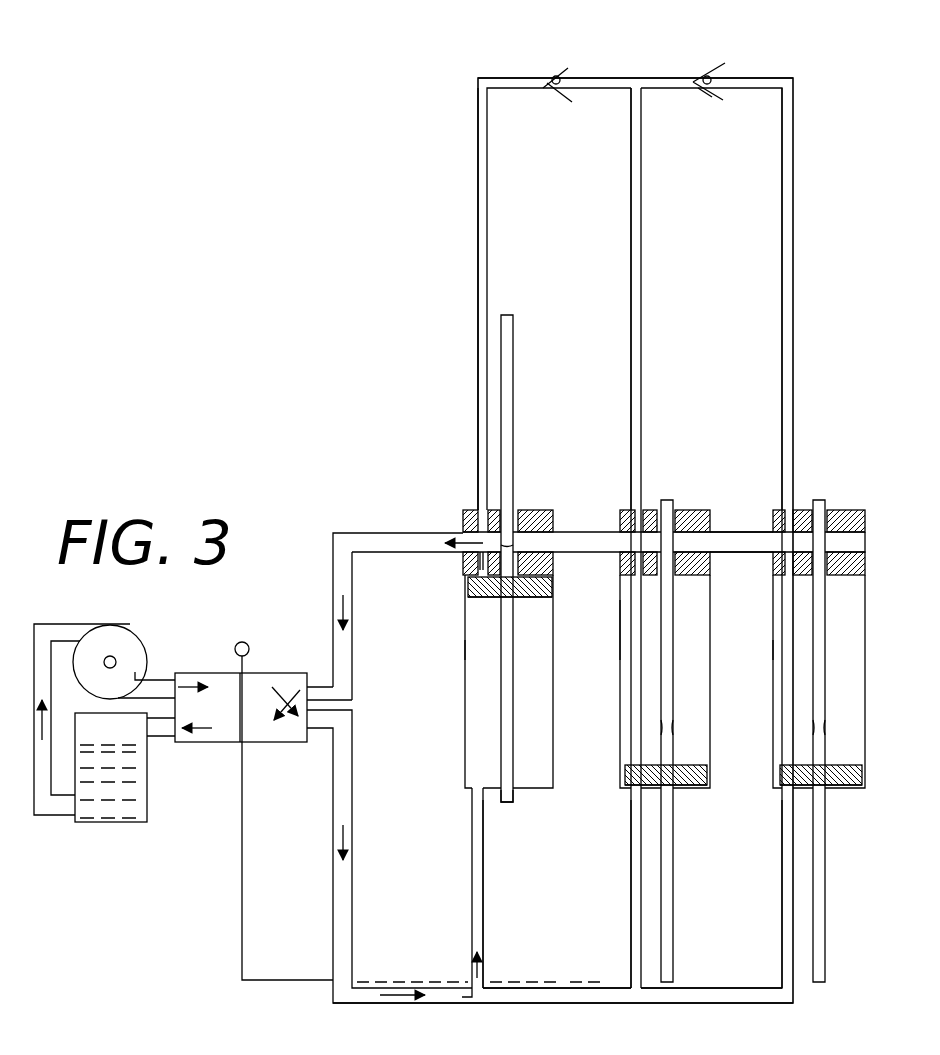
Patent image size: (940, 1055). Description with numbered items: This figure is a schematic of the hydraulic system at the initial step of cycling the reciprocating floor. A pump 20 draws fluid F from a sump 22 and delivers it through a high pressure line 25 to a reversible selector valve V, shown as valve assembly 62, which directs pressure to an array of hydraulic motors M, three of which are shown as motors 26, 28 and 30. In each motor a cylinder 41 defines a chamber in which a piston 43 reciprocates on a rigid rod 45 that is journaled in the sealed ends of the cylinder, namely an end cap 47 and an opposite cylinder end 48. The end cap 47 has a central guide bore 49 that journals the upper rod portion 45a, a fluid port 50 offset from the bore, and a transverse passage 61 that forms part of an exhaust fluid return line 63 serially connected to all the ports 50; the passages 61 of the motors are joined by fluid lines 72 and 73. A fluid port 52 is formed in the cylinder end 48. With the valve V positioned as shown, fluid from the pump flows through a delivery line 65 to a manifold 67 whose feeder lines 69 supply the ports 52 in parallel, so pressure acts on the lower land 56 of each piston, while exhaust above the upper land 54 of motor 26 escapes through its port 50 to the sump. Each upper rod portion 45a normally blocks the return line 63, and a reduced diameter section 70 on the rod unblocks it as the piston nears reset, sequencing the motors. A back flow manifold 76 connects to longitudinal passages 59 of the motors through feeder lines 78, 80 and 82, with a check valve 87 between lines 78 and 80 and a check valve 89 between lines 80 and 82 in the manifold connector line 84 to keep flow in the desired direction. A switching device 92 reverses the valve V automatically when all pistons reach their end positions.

The pump 20 is at (130, 628).
The sump 22 is at (147, 792).
The high pressure line 25 is at (168, 680).
The hydraulic motor 26 is at (463, 733).
The hydraulic motor 28 is at (618, 733).
The hydraulic motor 30 is at (771, 733).
The cylinder 41 is at (465, 650).
The piston 43 is at (482, 598).
The rod 45 is at (503, 695).
The upper portion of rod 45a is at (513, 366).
The end cap 47 is at (513, 522).
The cylinder end 48 is at (535, 790).
The guide bore 49 is at (505, 550).
The fluid port 50 is at (468, 580).
The fluid port 52 is at (478, 790).
The land 54 is at (628, 770).
The land 56 is at (620, 627).
The longitudinal passage 59 is at (465, 515).
The transverse passage 61 is at (527, 540).
The control valve 62 is at (305, 673).
The exhaust fluid return line 63 is at (333, 540).
The delivery line 65 is at (310, 728).
The manifold 67 is at (590, 988).
The feeder lines 69 is at (485, 900).
The reduced diameter section 70 is at (500, 548).
The fluid line 72 is at (597, 552).
The fluid line 73 is at (748, 552).
The manifold 76 is at (623, 53).
The feeder line 78 is at (478, 193).
The feeder line 80 is at (631, 193).
The feeder line 82 is at (782, 193).
The manifold connector line 84 is at (678, 77).
The check valve 87 is at (556, 76).
The check valve 89 is at (700, 98).
The switching device 92 is at (230, 933).
The hydraulic motors M is at (460, 664).
The reversible selector valve V is at (283, 673).
The fluid F is at (100, 790).